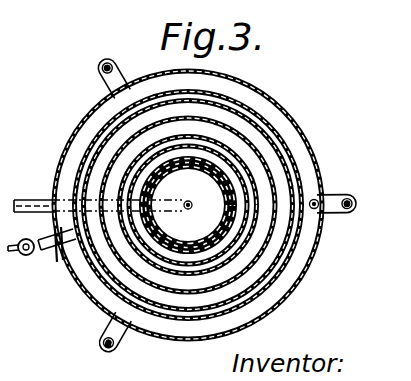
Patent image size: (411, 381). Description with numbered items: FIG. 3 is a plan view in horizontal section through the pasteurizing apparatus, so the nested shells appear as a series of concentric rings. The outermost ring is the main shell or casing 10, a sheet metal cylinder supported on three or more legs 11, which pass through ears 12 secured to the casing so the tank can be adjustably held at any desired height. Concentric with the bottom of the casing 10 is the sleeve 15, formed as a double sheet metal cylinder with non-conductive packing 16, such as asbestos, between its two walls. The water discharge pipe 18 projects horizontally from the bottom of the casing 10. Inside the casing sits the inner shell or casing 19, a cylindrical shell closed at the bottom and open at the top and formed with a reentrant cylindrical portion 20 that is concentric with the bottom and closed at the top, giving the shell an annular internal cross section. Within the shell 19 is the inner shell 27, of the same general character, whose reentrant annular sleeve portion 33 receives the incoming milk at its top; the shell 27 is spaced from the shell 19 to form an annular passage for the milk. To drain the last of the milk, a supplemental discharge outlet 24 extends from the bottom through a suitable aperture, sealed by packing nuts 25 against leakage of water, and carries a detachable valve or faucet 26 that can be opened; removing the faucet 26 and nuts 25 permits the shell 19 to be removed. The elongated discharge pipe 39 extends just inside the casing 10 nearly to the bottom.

The main shell or casing 10 is at (255, 95).
The legs 11 is at (104, 344).
The ears 12 is at (103, 80).
The sleeve 15 is at (214, 227).
The non-conductive packing 16 is at (188, 201).
The water discharge pipe 18 is at (31, 200).
The inner shell or casing 19 is at (85, 148).
The reentrant cylindrical portion 20 is at (147, 239).
The supplemental discharge outlet 24 is at (43, 257).
The packing nuts 25 is at (56, 260).
The detachable valve or faucet 26 is at (18, 254).
The inner shell 27 is at (86, 176).
The reentrant annular sleeve portion 33 is at (132, 163).
The elongated discharge pipe 39 is at (321, 213).